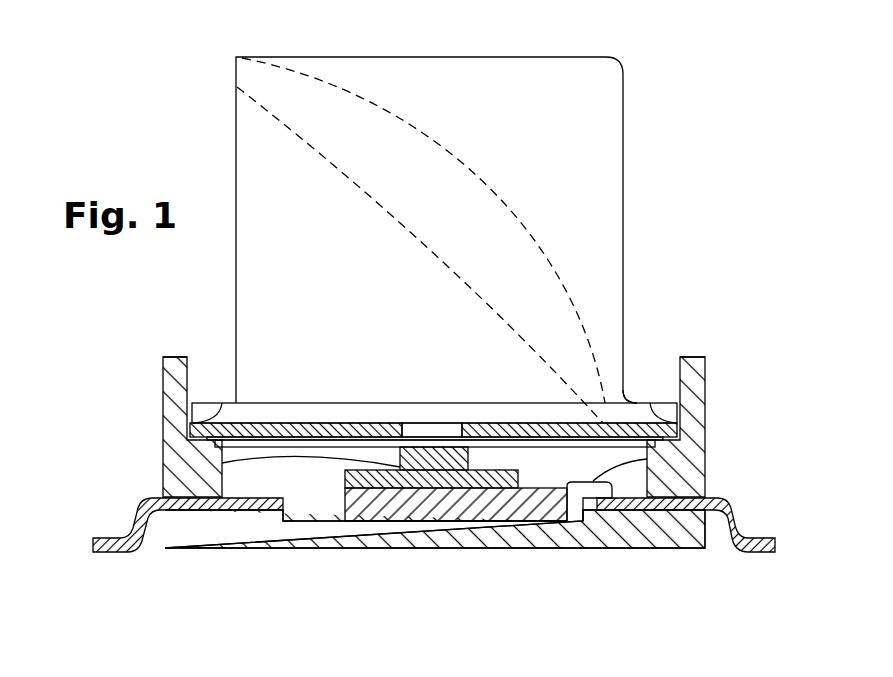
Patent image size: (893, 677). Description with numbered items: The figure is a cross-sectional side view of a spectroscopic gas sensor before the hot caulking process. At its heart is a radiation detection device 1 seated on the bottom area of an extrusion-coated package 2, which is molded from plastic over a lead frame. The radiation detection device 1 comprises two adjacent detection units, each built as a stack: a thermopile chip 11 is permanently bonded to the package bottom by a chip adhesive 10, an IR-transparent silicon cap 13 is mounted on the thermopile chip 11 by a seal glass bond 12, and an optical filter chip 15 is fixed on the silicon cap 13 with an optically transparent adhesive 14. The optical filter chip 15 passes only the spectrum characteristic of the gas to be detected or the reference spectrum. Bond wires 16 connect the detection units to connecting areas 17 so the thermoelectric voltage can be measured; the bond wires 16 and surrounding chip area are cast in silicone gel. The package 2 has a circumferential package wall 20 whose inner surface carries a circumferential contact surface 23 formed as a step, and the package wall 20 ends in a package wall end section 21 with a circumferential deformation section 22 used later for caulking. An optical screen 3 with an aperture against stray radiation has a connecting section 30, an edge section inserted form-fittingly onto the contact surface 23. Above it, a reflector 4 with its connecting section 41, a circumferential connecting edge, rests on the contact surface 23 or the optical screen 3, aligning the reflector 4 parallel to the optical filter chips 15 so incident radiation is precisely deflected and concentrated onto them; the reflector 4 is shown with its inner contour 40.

The radiation detection device 1 is at (444, 550).
The package 2 is at (228, 537).
The optical screen 3 is at (307, 430).
The reflector 4 is at (660, 162).
The chip adhesive 10 is at (568, 521).
The thermopile chip 11 is at (513, 505).
The seal glass bond 12 is at (345, 489).
The silicon cap 13 is at (430, 470).
The optically transparent adhesive 14 is at (222, 463).
The optical filter chip 15 is at (413, 465).
The bond wire 16 is at (647, 459).
The connecting area 17 is at (132, 522).
The package wall 20 is at (163, 477).
The package wall end section 21 is at (163, 401).
The deformation section 22 is at (175, 368).
The circumferential contact surface 23 is at (222, 403).
The connecting section 30 is at (662, 417).
The cap inner contour 40 is at (352, 148).
The connecting section 41 is at (200, 412).